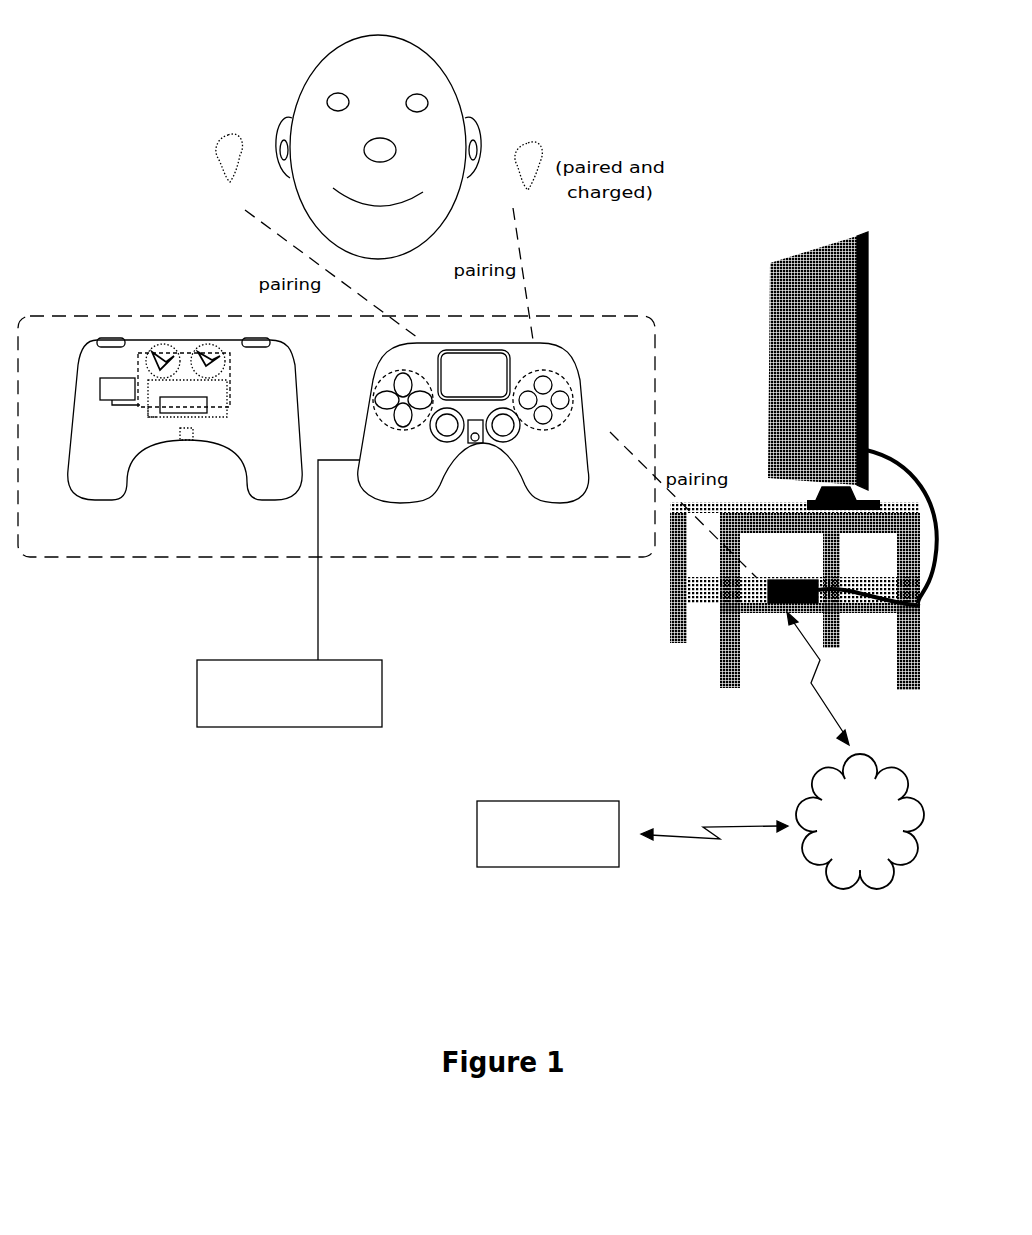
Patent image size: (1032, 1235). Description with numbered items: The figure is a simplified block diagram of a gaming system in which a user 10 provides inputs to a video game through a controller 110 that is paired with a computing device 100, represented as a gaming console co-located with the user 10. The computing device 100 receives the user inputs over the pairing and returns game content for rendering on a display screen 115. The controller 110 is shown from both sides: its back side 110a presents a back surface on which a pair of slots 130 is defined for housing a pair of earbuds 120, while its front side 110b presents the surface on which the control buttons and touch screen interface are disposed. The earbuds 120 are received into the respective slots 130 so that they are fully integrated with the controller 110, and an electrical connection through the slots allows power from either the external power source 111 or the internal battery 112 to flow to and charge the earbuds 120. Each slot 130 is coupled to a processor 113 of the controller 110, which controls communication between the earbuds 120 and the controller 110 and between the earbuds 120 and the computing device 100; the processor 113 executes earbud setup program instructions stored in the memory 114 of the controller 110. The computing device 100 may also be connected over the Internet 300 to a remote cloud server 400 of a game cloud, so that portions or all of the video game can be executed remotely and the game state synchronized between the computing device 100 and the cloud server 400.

The user 10 is at (400, 62).
The pair of earbuds 120 is at (218, 153).
The display screen 115 is at (804, 260).
The controller 110 is at (336, 399).
The back side 110a is at (138, 345).
The front side 110b is at (398, 472).
The pair of slots 130 is at (157, 348).
The memory 114 is at (100, 385).
The processor 113 is at (155, 410).
The battery 112 is at (205, 400).
The external power source 111 is at (370, 676).
The computing device 100 is at (767, 590).
The cloud server 400 is at (580, 815).
The Internet 300 is at (860, 821).